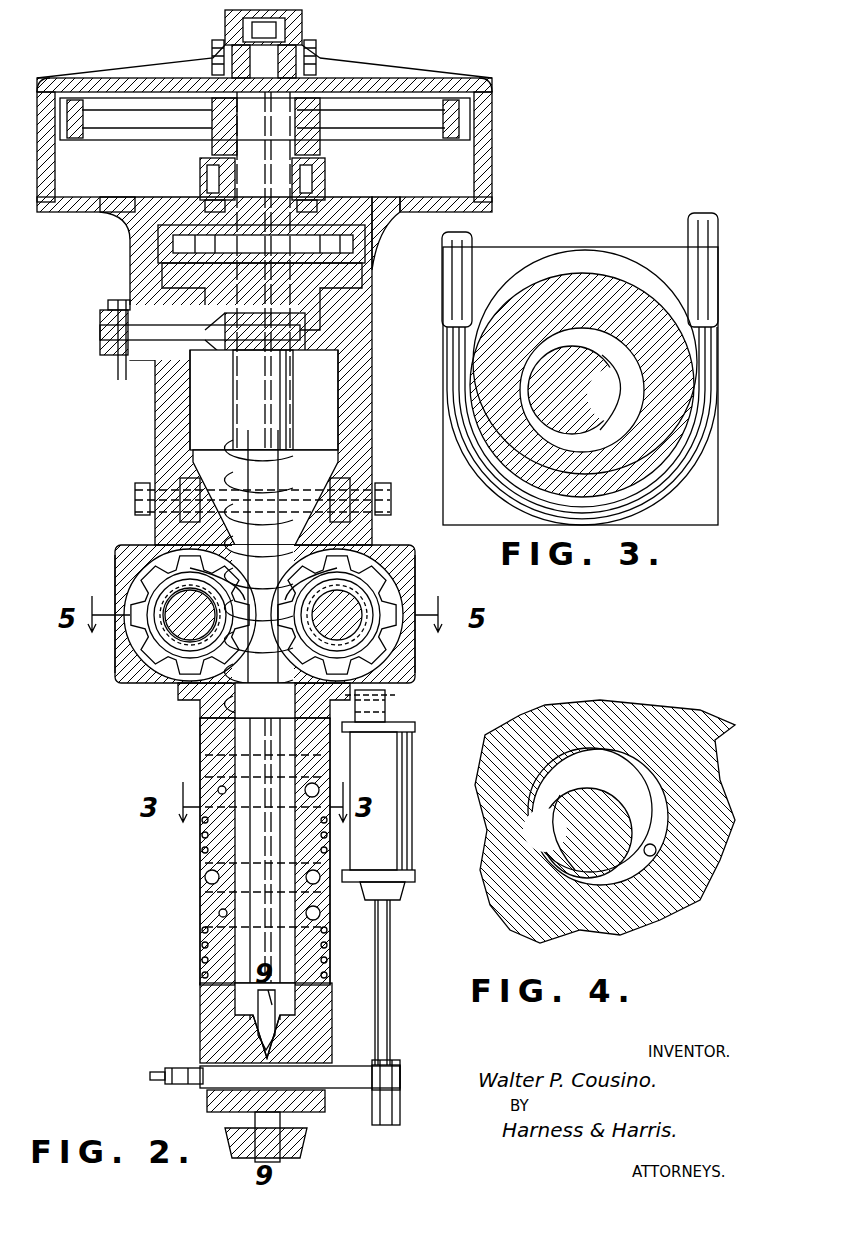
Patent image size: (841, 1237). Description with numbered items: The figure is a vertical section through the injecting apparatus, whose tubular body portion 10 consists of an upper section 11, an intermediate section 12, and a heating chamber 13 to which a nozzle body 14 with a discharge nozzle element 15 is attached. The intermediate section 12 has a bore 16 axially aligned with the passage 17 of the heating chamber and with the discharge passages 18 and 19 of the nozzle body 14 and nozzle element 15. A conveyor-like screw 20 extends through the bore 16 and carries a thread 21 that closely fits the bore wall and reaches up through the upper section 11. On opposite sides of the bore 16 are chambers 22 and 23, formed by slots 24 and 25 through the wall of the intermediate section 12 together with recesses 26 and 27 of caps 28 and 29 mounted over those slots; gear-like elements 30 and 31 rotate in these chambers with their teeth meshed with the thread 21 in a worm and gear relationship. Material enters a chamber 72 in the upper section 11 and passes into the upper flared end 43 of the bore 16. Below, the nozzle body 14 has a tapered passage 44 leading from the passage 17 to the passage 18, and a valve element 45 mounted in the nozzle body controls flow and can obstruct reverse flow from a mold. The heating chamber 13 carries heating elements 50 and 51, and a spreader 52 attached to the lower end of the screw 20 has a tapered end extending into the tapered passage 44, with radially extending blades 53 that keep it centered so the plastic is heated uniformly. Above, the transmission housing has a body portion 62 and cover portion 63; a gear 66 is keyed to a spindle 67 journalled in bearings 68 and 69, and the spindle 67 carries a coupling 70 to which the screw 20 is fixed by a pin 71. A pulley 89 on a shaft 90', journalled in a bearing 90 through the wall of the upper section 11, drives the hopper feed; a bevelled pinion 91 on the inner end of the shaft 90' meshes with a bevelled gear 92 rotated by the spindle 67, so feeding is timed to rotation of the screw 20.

In FIG. 2, the tubular body portion 10 is at (190, 753).
In FIG. 2, the upper section 11 is at (160, 411).
In FIG. 2, the intermediate section 12 is at (180, 699).
In FIG. 4, the intermediate section 12 is at (600, 721).
In FIG. 2, the heating chamber 13 is at (210, 847).
In FIG. 3, the heating chamber 13 is at (695, 389).
In FIG. 2, the nozzle body 14 is at (205, 1029).
In FIG. 2, the discharge nozzle element 15 is at (275, 1139).
In FIG. 2, the bore 16 is at (190, 606).
In FIG. 4, the bore 16 is at (656, 849).
In FIG. 2, the passage 17 is at (205, 837).
In FIG. 2, the discharge passage 18 is at (302, 1075).
In FIG. 2, the discharge passage 19 is at (272, 1091).
In FIG. 2, the conveyor-like screw 20 is at (288, 391).
In FIG. 2, the thread 21 is at (280, 457).
In FIG. 3, the thread 21 is at (532, 361).
In FIG. 4, the thread 21 is at (640, 797).
In FIG. 2, the chamber 22 is at (348, 571).
In FIG. 2, the chamber 23 is at (165, 581).
In FIG. 2, the slot 24 is at (388, 489).
In FIG. 2, the slot 25 is at (180, 547).
In FIG. 2, the recess 26 is at (385, 587).
In FIG. 2, the recess 27 is at (118, 587).
In FIG. 2, the cap 28 is at (410, 667).
In FIG. 2, the cap 29 is at (122, 674).
In FIG. 2, the gear-like element 30 is at (372, 574).
In FIG. 2, the gear-like element 31 is at (160, 624).
In FIG. 2, the upper flared end 43 is at (305, 461).
In FIG. 2, the tapered passage 44 is at (285, 1037).
In FIG. 2, the valve element 45 is at (205, 1085).
In FIG. 2, the heating element 50 is at (326, 827).
In FIG. 3, the heating element 50 is at (702, 419).
In FIG. 2, the heating element 51 is at (328, 911).
In FIG. 2, the spreader 52 is at (272, 791).
In FIG. 2, the blades 53 is at (292, 987).
In FIG. 2, the body portion 62 is at (486, 156).
In FIG. 2, the cover portion 63 is at (437, 72).
In FIG. 2, the gear 66 is at (470, 123).
In FIG. 2, the spindle 67 is at (315, 167).
In FIG. 2, the bearing 68 is at (303, 54).
In FIG. 2, the bearing 69 is at (220, 179).
In FIG. 2, the coupling 70 is at (288, 365).
In FIG. 2, the pin 71 is at (228, 344).
In FIG. 2, the chamber 72 is at (200, 429).
In FIG. 2, the pulley 89 is at (115, 344).
In FIG. 2, the bearing 90 is at (107, 328).
In FIG. 2, the shaft 90' is at (85, 323).
In FIG. 2, the bevelled pinion 91 is at (185, 359).
In FIG. 2, the bevelled gear 92 is at (325, 311).